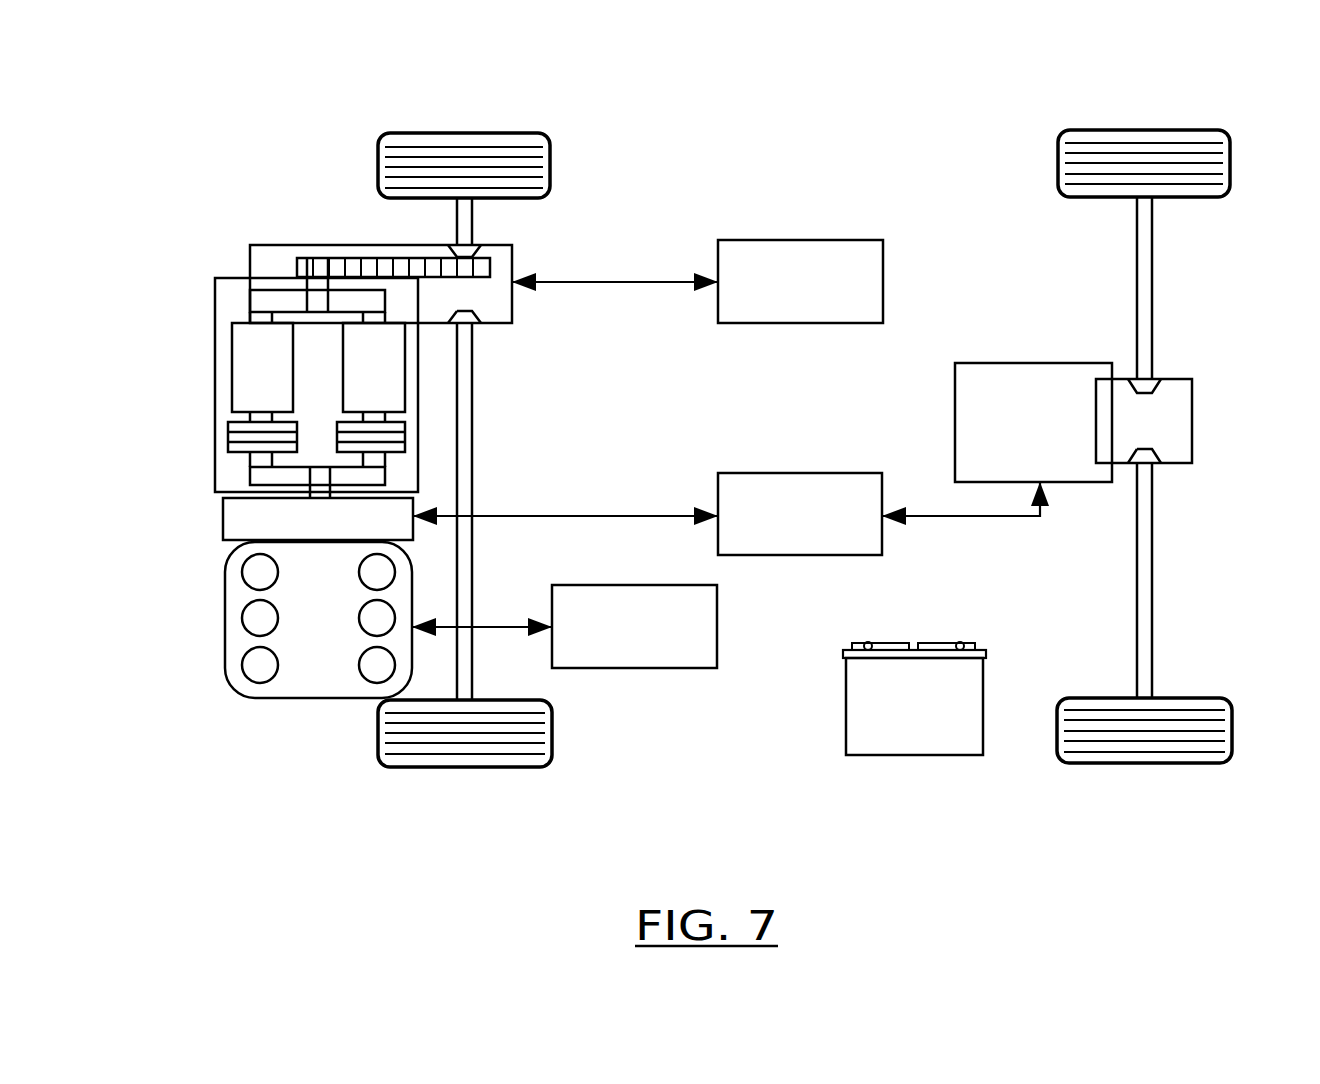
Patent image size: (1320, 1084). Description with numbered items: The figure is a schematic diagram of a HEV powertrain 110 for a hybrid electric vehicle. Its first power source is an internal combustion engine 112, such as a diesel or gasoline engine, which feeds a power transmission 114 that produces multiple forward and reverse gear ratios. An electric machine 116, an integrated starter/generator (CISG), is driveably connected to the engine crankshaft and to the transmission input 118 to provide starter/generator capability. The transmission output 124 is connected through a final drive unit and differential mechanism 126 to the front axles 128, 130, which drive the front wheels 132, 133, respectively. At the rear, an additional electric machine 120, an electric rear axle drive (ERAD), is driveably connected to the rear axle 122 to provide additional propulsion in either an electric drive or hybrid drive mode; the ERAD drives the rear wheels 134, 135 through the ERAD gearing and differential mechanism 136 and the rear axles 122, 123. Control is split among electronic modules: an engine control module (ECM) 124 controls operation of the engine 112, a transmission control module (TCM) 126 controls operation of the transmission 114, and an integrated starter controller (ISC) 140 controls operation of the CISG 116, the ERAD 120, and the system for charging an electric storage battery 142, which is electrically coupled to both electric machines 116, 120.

The HEV powertrain 110 is at (953, 118).
The internal combustion engine 112 is at (325, 698).
The power transmission 114 is at (215, 472).
The electric machine 116 is at (225, 515).
The transmission input 118 is at (320, 477).
The additional electric machine 120 is at (1035, 363).
The rear axle 122 is at (1153, 300).
The rear axle 123 is at (1153, 566).
The transmission output 124 is at (318, 295).
The final drive unit and differential mechanism 126 is at (322, 245).
The front axle 128 is at (457, 225).
The front axle 130 is at (473, 540).
The front wheel 132 is at (515, 133).
The front wheel 133 is at (497, 767).
The rear wheel 134 is at (1195, 130).
The rear wheel 135 is at (1190, 763).
The ERAD gearing and differential mechanism 136 is at (513, 268).
The integrated starter controller 140 is at (808, 473).
The electric storage battery 142 is at (920, 755).